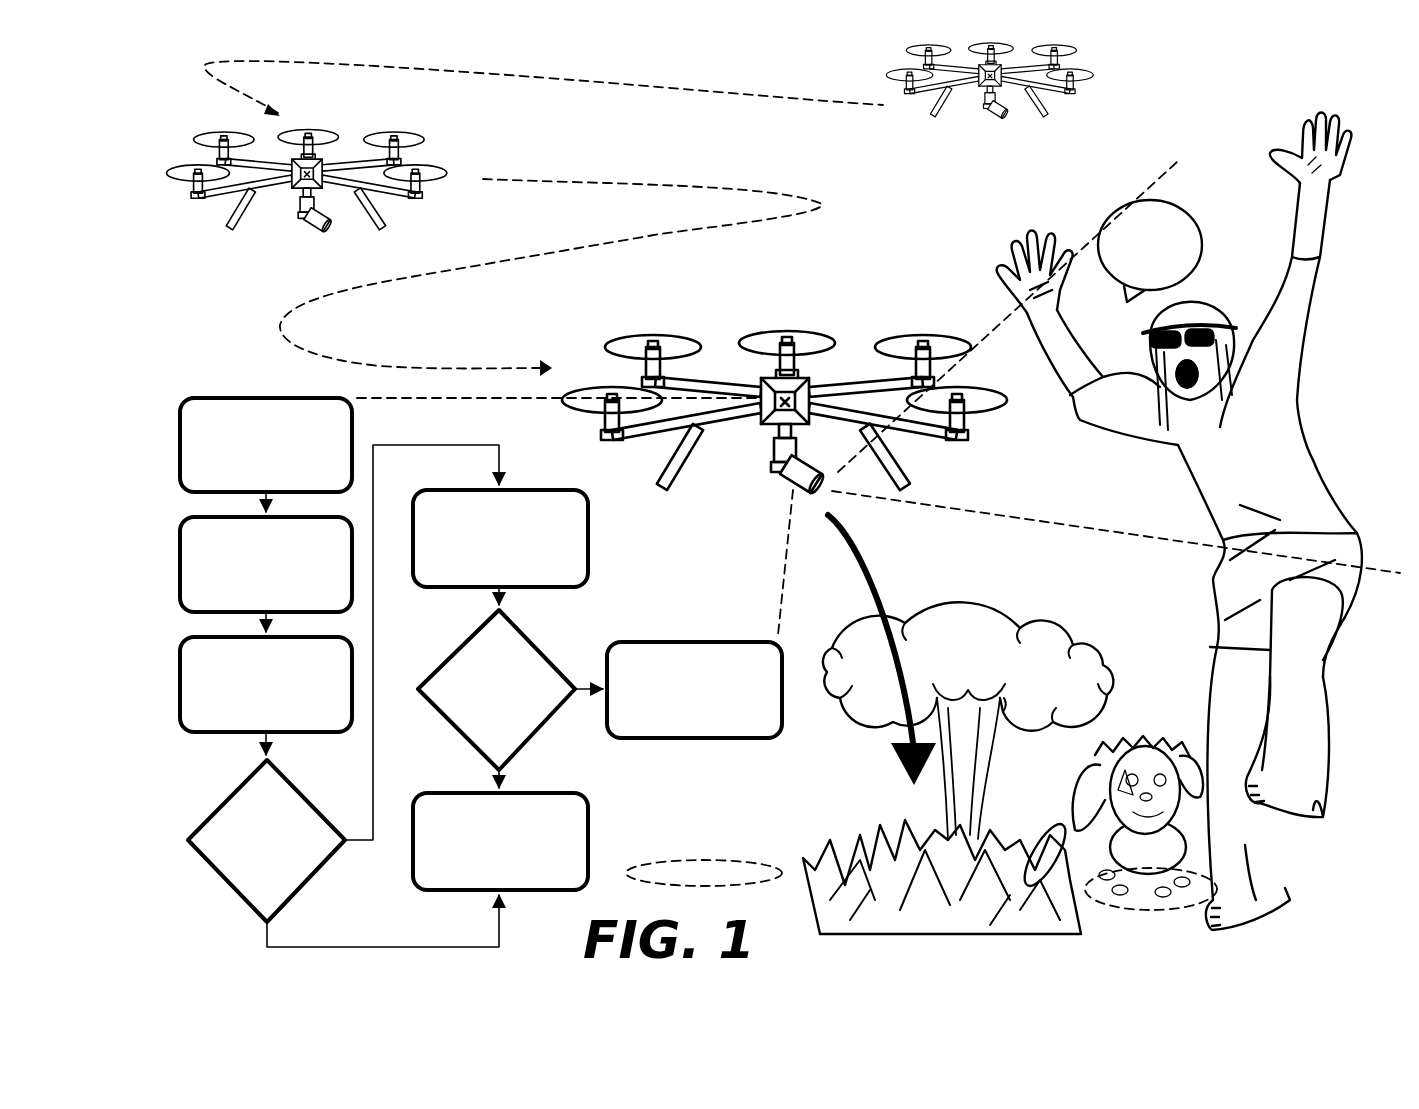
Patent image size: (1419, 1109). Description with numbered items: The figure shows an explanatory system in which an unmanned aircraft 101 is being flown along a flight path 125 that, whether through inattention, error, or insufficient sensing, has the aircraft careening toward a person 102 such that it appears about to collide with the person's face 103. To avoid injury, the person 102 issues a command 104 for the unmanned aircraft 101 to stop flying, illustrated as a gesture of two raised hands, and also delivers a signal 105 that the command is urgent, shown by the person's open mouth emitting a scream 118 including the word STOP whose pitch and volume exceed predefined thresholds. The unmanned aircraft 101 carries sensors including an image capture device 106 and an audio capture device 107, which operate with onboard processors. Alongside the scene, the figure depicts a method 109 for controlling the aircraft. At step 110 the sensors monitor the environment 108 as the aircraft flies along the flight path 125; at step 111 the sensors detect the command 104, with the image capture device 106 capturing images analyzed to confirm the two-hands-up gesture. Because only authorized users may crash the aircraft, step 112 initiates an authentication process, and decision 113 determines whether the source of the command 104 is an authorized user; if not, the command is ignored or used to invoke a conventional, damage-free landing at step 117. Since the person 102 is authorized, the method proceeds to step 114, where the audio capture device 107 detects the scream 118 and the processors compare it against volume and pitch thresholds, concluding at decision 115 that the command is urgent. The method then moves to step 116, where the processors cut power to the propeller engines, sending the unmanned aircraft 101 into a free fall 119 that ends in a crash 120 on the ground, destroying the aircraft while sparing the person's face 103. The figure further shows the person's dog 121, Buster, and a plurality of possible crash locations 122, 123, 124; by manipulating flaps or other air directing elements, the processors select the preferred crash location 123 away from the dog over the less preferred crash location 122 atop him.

The unmanned aircraft 101 is at (640, 380).
The person 102 is at (1179, 516).
The person's face 103 is at (1237, 340).
The command 104 is at (1280, 137).
The signal 105 is at (1138, 380).
The image capture device 106 is at (808, 482).
The audio capture device 107 is at (775, 405).
The environment 108 is at (970, 195).
The method 109 is at (242, 360).
The step 110 is at (183, 410).
The step 111 is at (182, 540).
The step 112 is at (182, 662).
The decision 113 is at (230, 810).
The step 114 is at (530, 490).
The decision 115 is at (545, 656).
The step 116 is at (700, 641).
The step 117 is at (590, 833).
The scream 118 is at (1200, 232).
The free fall 119 is at (883, 594).
The crash 120 is at (988, 795).
The dog 121 is at (1140, 745).
The crash location 122 is at (1145, 910).
The crash location 123 is at (975, 937).
The crash location 124 is at (722, 862).
The flight path 125 is at (712, 191).